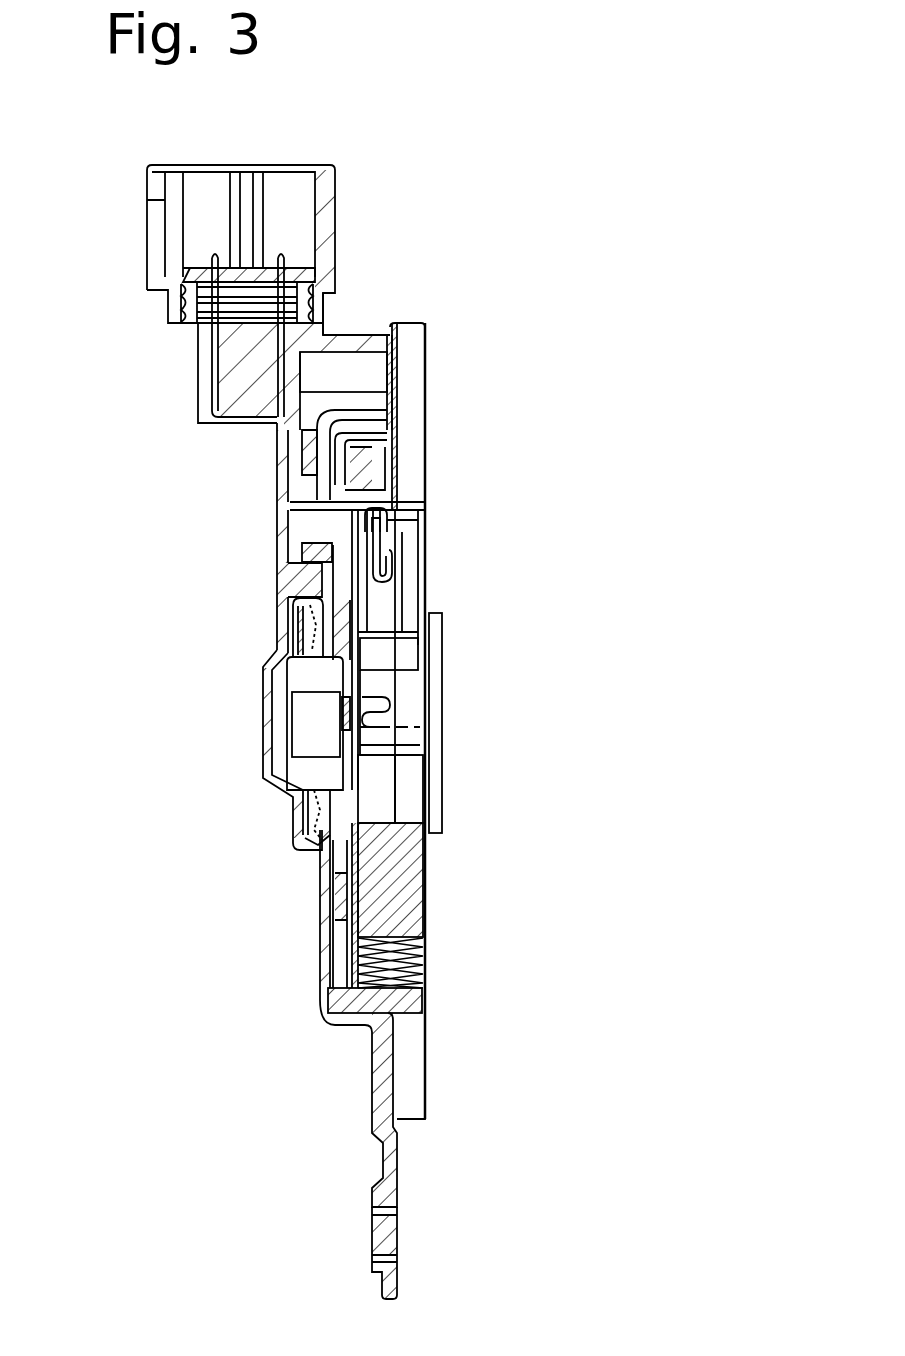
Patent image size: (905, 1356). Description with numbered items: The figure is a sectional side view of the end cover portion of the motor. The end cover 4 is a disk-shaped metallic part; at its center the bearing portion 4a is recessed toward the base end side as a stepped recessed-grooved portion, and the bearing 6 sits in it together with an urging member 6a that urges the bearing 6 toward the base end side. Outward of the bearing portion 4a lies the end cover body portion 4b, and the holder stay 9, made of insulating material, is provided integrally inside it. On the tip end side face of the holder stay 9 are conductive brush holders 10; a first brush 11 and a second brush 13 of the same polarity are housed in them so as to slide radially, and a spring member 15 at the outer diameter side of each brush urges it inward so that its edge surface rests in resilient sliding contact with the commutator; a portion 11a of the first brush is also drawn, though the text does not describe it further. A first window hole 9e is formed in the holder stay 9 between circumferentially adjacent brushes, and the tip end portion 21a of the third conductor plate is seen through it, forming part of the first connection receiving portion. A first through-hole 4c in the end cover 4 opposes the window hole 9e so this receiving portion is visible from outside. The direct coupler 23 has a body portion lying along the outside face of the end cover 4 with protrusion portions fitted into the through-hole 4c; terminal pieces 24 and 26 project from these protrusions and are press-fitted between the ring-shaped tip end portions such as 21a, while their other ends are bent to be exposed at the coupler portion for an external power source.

The direct coupler 23 is at (362, 148).
The holder stay 9 is at (355, 1000).
The first window hole 9e is at (363, 490).
The terminal piece 24 is at (280, 445).
The terminal piece 26 is at (283, 538).
The tip end portion of the third conductor plate 21a is at (390, 522).
The hook portion of rod 11a is at (395, 545).
The brush holder 10 is at (412, 578).
The first brush 11 is at (388, 613).
The first through-hole 4c is at (297, 580).
The end cover 4 is at (290, 945).
The bearing portion 4a is at (272, 725).
The bearing 6 is at (300, 678).
The urging member 6a is at (308, 820).
The end cover body portion 4b is at (325, 895).
The second brush 13 is at (425, 880).
The spring member 15 is at (425, 965).